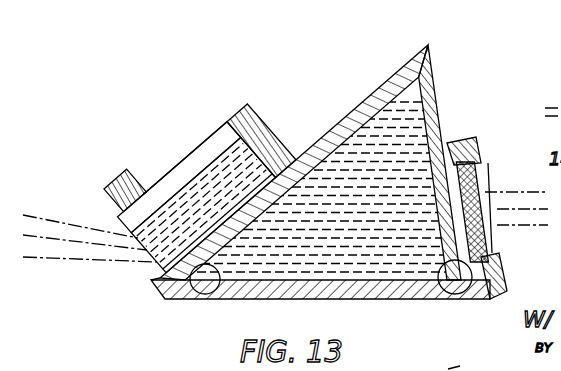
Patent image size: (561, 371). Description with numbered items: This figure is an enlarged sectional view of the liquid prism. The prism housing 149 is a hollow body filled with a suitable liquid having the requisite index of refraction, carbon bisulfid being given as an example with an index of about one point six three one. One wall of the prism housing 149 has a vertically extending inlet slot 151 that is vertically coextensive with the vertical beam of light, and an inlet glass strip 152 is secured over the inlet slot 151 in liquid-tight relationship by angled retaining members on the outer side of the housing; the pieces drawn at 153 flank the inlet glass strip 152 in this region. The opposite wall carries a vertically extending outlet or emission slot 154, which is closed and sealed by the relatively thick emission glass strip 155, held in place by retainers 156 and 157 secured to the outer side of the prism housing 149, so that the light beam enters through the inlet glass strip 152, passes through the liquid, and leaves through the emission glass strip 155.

The prism housing 149 is at (432, 83).
The inlet slot 151 is at (452, 295).
The inlet glass strip 152 is at (472, 190).
The clamping block 153 is at (497, 118).
The emission slot 154 is at (212, 296).
The emission glass strip 155 is at (213, 173).
The retainer 156 is at (262, 122).
The retainer 157 is at (118, 180).